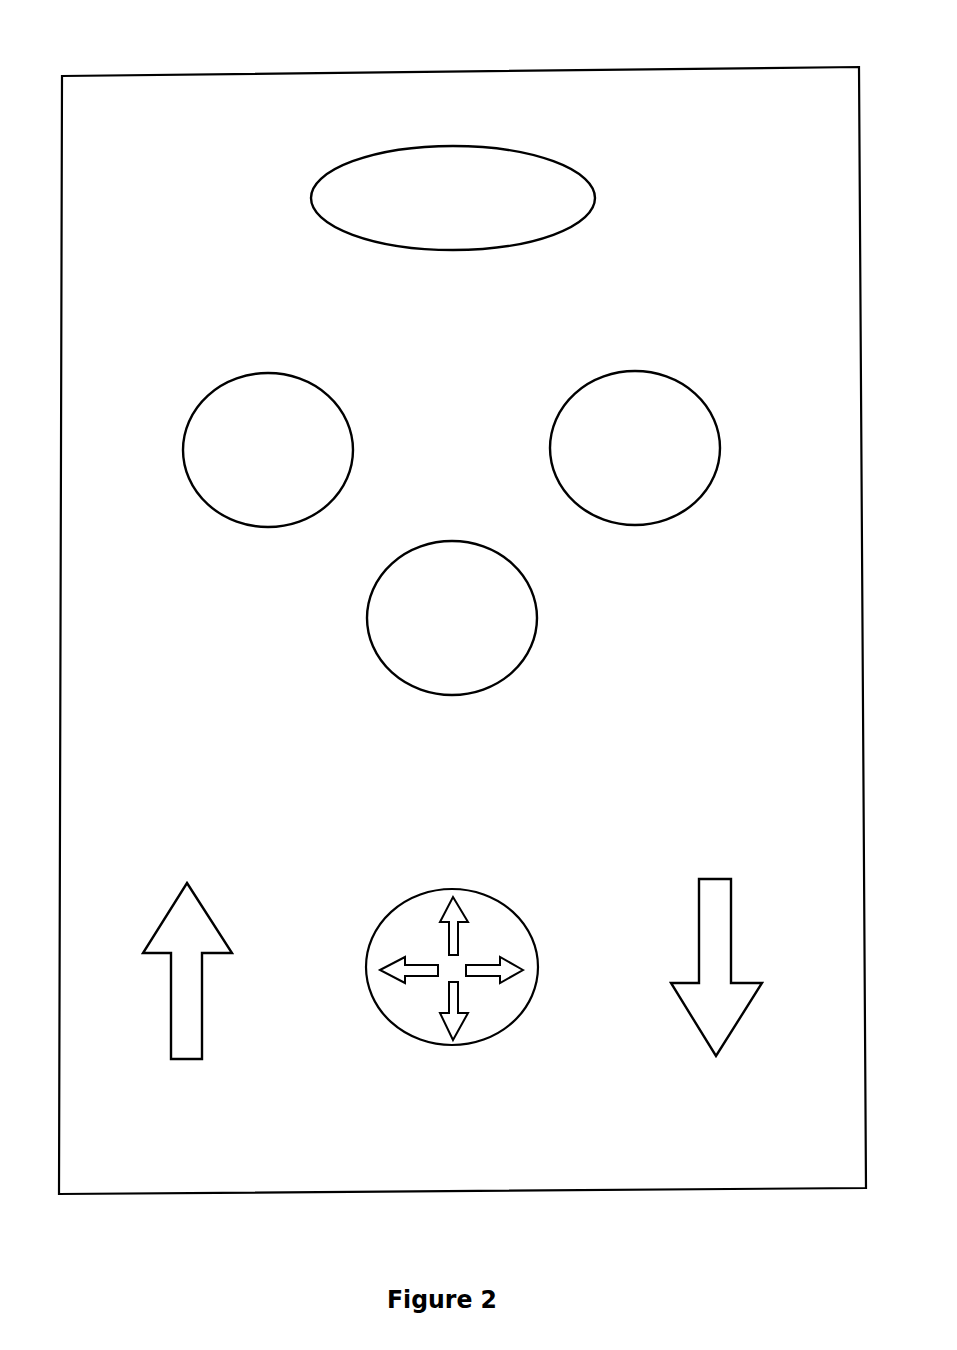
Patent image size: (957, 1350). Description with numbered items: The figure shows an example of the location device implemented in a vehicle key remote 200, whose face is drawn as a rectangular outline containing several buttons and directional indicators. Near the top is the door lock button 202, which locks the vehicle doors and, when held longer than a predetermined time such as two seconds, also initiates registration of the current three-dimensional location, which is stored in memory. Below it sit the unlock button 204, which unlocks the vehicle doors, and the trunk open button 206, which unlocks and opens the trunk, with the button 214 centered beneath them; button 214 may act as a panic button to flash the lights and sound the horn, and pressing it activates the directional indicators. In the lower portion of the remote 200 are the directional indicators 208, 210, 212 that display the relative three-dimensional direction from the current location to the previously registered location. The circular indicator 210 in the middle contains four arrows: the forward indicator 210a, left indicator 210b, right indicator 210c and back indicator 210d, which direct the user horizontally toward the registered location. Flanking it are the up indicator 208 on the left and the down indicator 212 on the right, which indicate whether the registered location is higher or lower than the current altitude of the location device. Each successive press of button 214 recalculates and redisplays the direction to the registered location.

The remote control interface / display 200 is at (429, 71).
The door lock button 202 is at (453, 198).
The unlock button 204 is at (268, 450).
The trunk open button 206 is at (635, 448).
The button 214 is at (452, 618).
The up indicator 208 is at (198, 898).
The down indicator 212 is at (722, 878).
The directional indicator 210 is at (462, 1077).
The forward indicator 210a is at (462, 895).
The left indicator 210b is at (388, 980).
The right indicator 210c is at (513, 953).
The back indicator 210d is at (450, 1040).